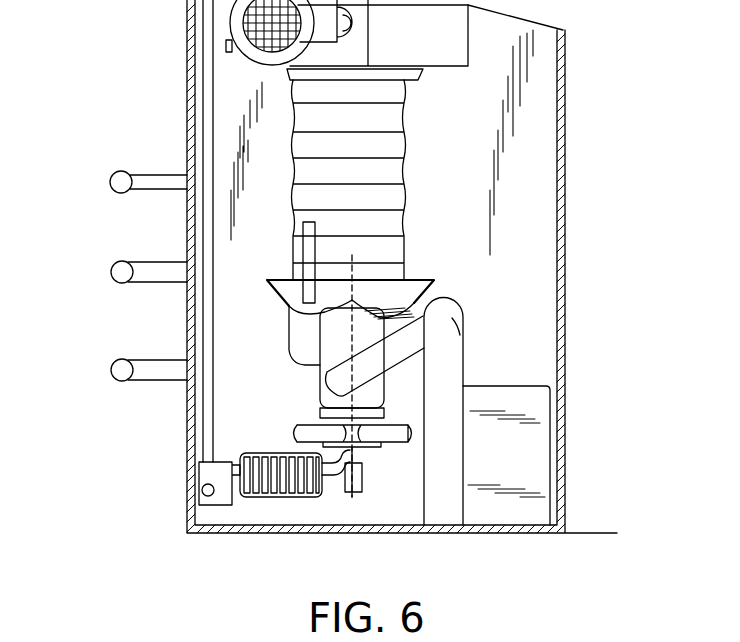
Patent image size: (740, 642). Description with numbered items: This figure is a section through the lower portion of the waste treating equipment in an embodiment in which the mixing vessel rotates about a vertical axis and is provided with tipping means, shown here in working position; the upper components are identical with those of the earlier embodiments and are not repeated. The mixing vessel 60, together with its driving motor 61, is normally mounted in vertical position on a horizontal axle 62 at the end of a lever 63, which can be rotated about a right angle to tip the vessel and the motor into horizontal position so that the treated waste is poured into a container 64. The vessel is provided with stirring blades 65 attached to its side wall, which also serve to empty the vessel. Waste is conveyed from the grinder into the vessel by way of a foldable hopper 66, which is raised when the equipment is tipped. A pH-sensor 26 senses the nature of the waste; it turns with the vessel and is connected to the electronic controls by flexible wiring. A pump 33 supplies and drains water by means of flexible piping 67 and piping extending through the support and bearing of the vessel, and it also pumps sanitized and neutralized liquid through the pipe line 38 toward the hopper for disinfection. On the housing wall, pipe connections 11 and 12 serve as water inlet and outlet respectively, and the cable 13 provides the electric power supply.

The pipe connection 11 is at (112, 376).
The pipe connection 12 is at (112, 279).
The cable 13 is at (111, 186).
The pH-sensor 26 is at (303, 248).
The pump 33 is at (200, 494).
The pipe line 38 is at (207, 80).
The mixing vessel 60 is at (417, 278).
The driving motor 61 is at (327, 327).
The horizontal axle 62 is at (463, 332).
The lever 63 is at (342, 378).
The container 64 is at (540, 487).
The stirring blades 65 is at (433, 298).
The foldable hopper 66 is at (398, 168).
The flexible piping 67 is at (278, 497).